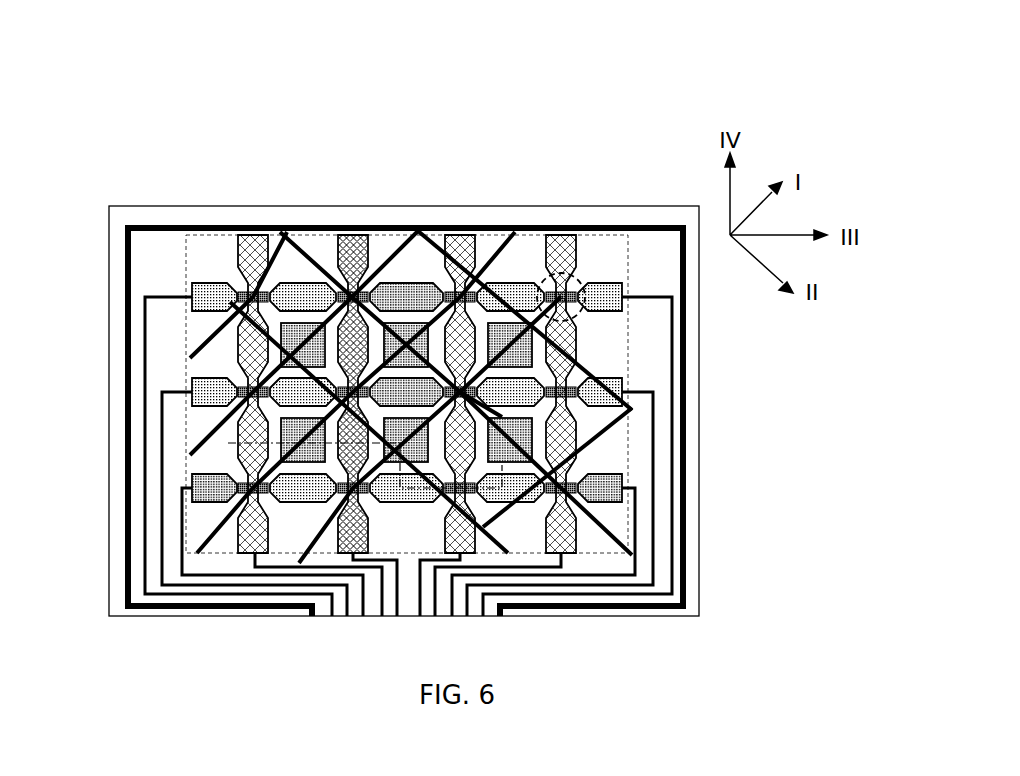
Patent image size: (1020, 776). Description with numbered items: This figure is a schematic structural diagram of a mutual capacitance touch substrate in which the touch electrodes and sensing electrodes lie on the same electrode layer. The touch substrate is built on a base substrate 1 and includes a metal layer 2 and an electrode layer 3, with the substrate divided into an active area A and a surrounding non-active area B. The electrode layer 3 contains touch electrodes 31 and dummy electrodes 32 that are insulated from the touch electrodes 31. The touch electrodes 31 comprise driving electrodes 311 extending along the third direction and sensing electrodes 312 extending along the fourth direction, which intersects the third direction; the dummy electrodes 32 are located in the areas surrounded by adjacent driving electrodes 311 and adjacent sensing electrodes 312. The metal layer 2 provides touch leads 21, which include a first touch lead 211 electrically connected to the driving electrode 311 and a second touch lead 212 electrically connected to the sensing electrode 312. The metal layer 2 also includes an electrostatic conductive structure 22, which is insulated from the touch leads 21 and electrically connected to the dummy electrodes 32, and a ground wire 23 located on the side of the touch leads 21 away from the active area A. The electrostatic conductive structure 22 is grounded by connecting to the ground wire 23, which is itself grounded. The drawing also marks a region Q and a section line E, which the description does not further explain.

The base substrate 1 is at (160, 262).
The metal layer 2 is at (509, 422).
The touch lead 21 is at (502, 456).
The first touch lead 211 is at (860, 527).
The second touch lead 212 is at (635, 558).
The electrostatic conductive structure 22 is at (653, 425).
The ground wire 23 is at (683, 347).
The electrode layer 3 is at (387, 100).
The touch electrode 31 is at (417, 157).
The driving electrode 311 is at (417, 290).
The sensing electrode 312 is at (352, 297).
The dummy electrode 32 is at (292, 347).
The active area A is at (405, 540).
The non-active area B is at (110, 407).
The crossing region Q is at (578, 288).
The section line E- E is at (502, 480).